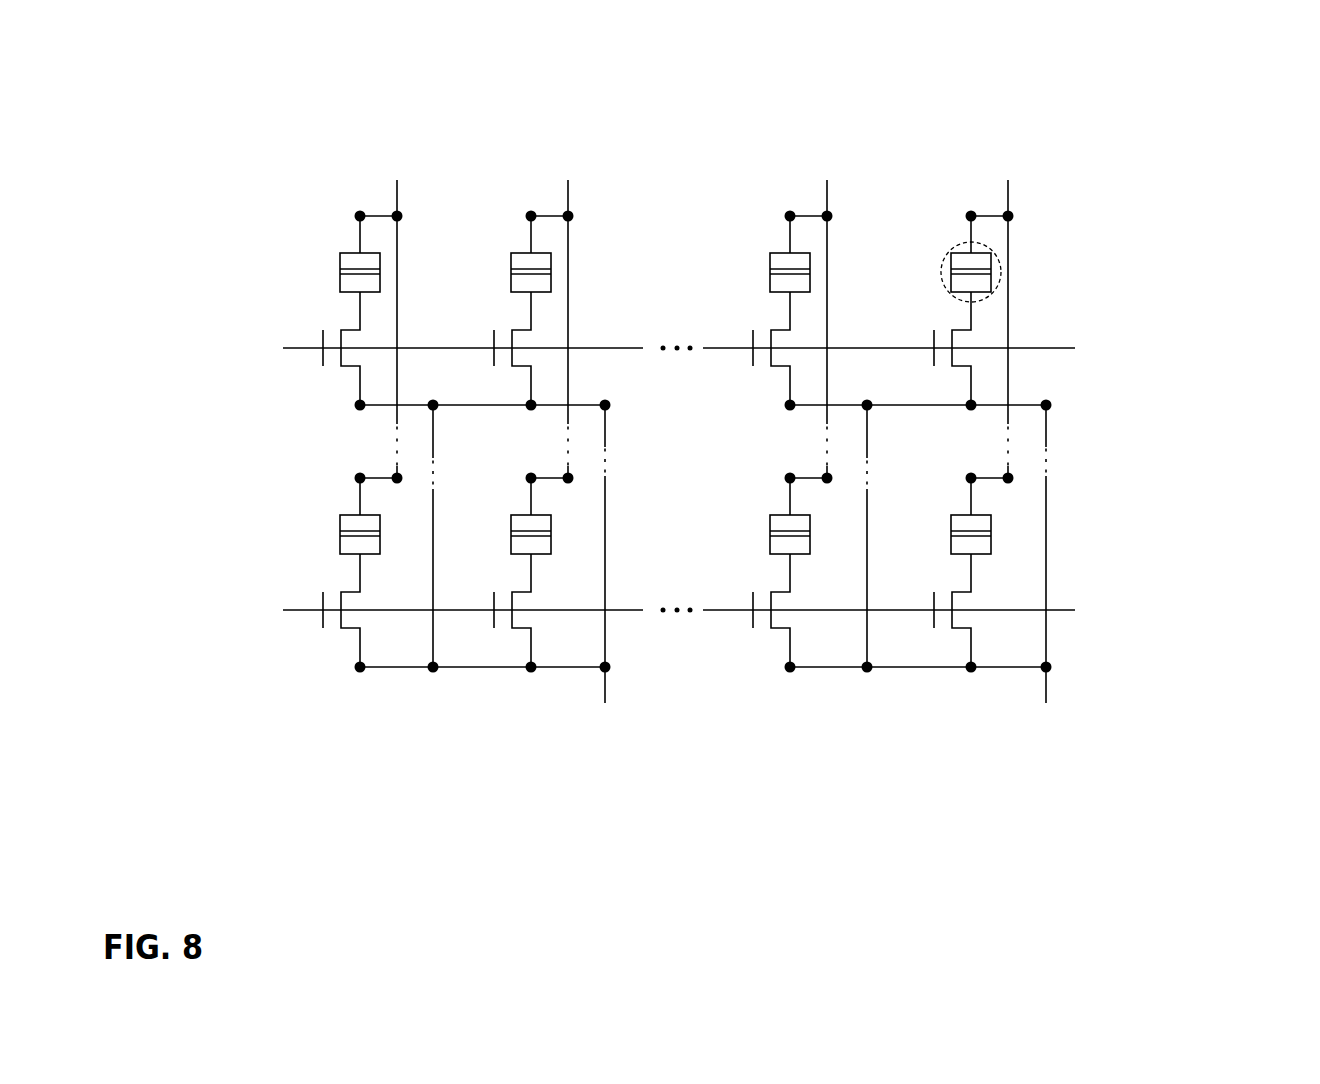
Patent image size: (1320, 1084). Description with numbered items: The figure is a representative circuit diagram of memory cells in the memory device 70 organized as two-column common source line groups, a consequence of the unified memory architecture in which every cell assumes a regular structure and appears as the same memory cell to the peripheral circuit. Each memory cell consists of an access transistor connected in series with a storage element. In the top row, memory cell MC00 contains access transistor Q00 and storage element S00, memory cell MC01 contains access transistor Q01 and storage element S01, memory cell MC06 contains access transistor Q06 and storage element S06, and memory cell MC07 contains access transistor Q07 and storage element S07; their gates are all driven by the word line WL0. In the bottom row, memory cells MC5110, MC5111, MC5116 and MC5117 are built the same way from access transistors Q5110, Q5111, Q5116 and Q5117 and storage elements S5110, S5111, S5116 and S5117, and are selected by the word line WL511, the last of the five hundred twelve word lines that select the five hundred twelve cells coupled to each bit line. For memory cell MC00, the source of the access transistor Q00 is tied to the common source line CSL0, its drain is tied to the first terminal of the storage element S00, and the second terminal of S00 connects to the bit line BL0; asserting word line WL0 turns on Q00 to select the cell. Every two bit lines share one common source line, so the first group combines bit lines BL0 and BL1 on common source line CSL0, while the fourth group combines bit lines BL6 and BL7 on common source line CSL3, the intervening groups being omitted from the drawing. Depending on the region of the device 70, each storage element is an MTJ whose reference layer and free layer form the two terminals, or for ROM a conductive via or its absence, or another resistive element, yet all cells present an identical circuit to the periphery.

The memory device 70 is at (1143, 72).
The bit line BL0 is at (391, 314).
The bit line BL1 is at (549, 314).
The bit line BL6 is at (829, 314).
The bit line BL7 is at (988, 314).
The word line WL0 is at (655, 351).
The word line WL511 is at (644, 613).
The common source line CSL0 is at (591, 569).
The common source line CSL3 is at (1045, 569).
The memory cell MC00 is at (343, 301).
The memory cell MC01 is at (513, 301).
The memory cell MC06 is at (773, 301).
The memory cell MC07 is at (953, 301).
The memory cell MC5110 is at (335, 563).
The memory cell MC5111 is at (513, 563).
The memory cell MC5116 is at (768, 563).
The memory cell MC5117 is at (953, 563).
The storage element S00 is at (338, 254).
The storage element S01 is at (509, 254).
The storage element S06 is at (769, 254).
The storage element S07 is at (948, 254).
The storage element S5110 is at (331, 516).
The storage element S5111 is at (502, 516).
The storage element S5116 is at (759, 516).
The storage element S5117 is at (942, 516).
The access transistor Q00 is at (324, 351).
The access transistor Q01 is at (495, 351).
The access transistor Q06 is at (754, 351).
The access transistor Q07 is at (934, 351).
The access transistor Q5110 is at (324, 613).
The access transistor Q5111 is at (495, 613).
The access transistor Q5116 is at (752, 613).
The access transistor Q5117 is at (935, 613).